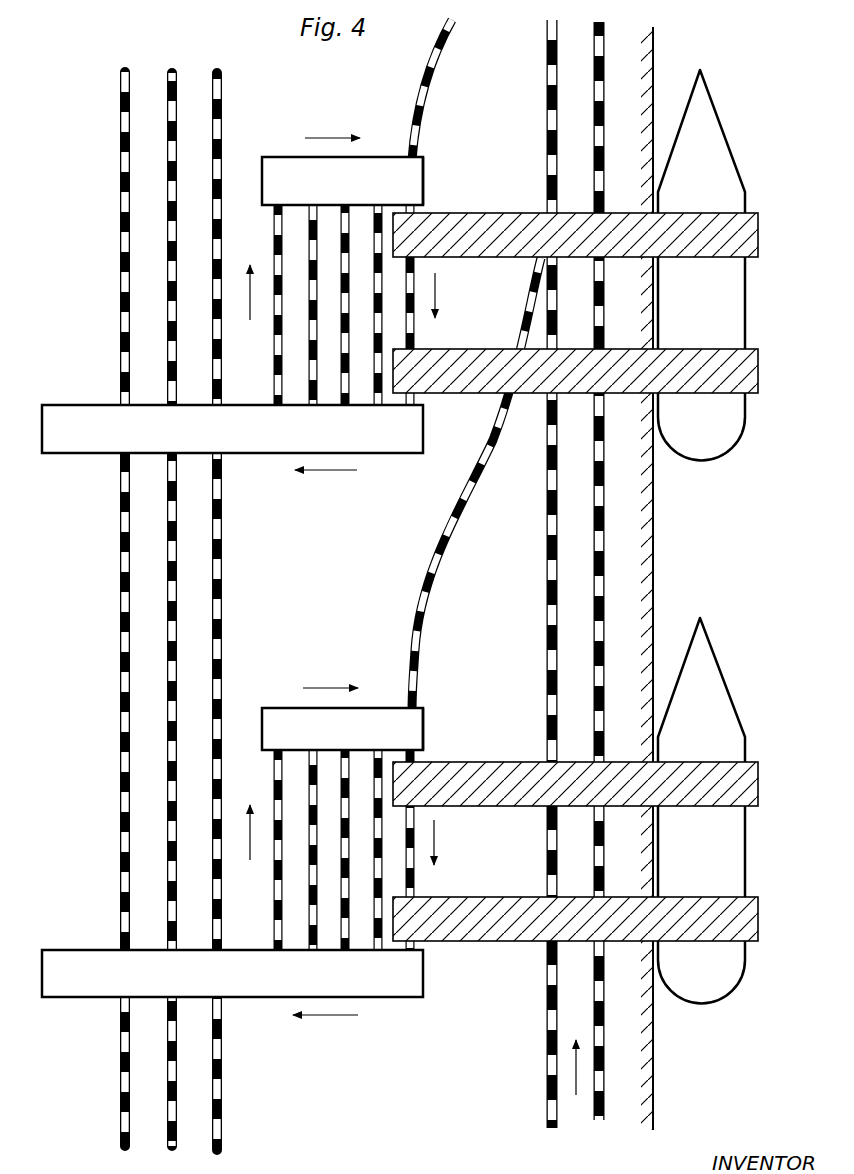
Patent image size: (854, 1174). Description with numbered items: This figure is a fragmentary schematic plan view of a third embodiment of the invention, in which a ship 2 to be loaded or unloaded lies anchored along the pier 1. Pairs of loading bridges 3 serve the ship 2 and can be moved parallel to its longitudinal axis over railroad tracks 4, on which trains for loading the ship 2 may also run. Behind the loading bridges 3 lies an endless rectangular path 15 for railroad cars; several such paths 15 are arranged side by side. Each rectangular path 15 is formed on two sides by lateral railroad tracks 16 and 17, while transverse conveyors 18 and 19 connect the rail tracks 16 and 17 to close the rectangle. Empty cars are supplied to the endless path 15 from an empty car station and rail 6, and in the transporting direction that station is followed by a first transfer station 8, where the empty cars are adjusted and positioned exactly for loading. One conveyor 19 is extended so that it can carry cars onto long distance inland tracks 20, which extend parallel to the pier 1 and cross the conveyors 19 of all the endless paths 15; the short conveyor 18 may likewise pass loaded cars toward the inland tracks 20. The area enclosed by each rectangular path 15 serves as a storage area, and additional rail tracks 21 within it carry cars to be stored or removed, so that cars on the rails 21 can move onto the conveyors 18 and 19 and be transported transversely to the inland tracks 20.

The pier 1 is at (655, 1072).
The ship 2 is at (723, 440).
The loading bridge 3 is at (477, 377).
The railroad tracks 4 is at (597, 1000).
The empty car station and rail 6 is at (419, 155).
The first transfer station 8 is at (419, 808).
The endless rectangular path 15 is at (423, 200).
The railroad track 16 is at (412, 758).
The railroad track 17 is at (276, 775).
The short conveyor 18 is at (284, 163).
The conveyor 19 is at (405, 996).
The long distance inland tracks 20 is at (130, 1117).
The additional rail tracks 21 is at (378, 952).